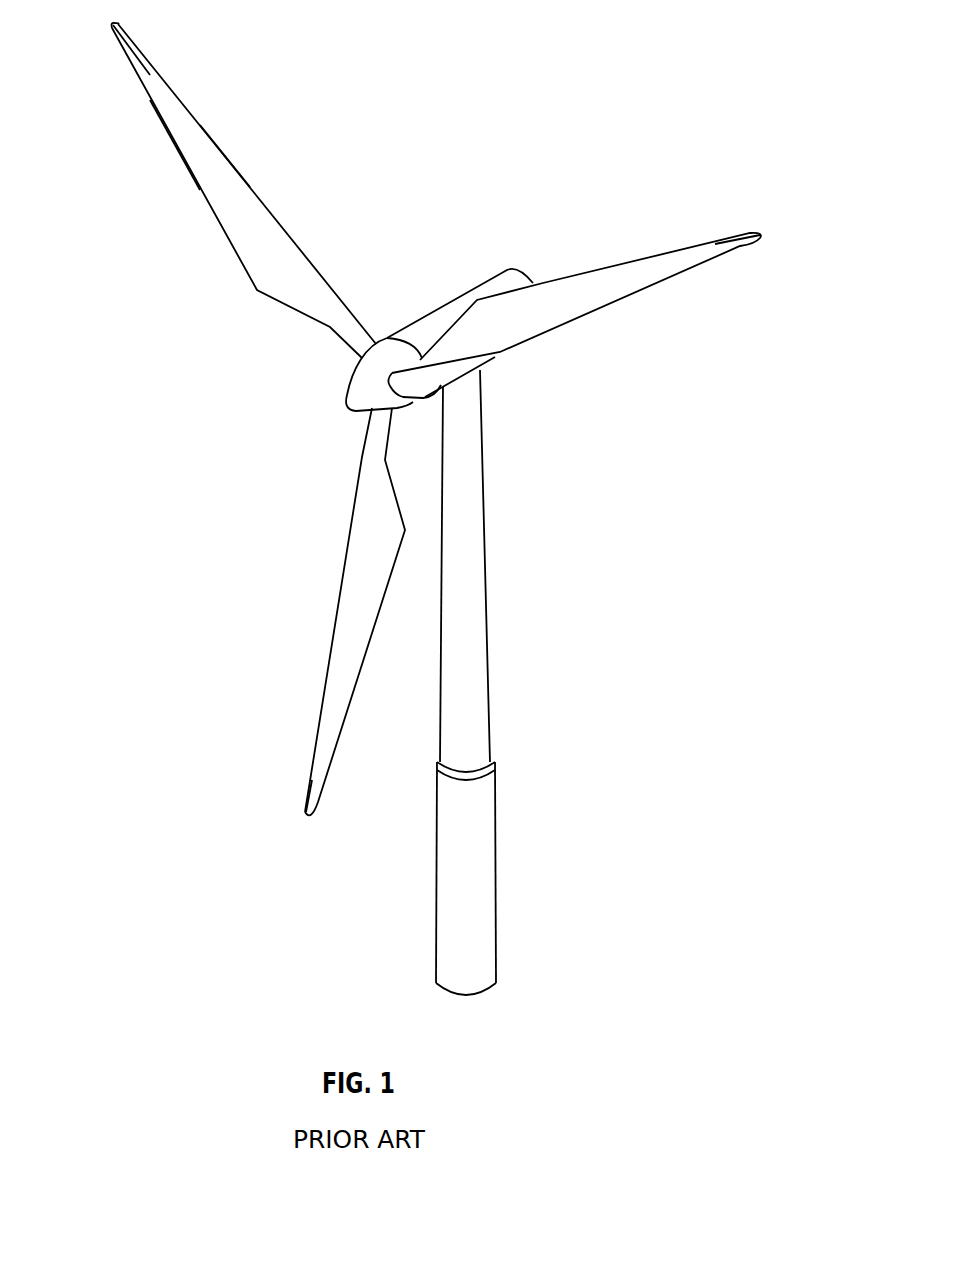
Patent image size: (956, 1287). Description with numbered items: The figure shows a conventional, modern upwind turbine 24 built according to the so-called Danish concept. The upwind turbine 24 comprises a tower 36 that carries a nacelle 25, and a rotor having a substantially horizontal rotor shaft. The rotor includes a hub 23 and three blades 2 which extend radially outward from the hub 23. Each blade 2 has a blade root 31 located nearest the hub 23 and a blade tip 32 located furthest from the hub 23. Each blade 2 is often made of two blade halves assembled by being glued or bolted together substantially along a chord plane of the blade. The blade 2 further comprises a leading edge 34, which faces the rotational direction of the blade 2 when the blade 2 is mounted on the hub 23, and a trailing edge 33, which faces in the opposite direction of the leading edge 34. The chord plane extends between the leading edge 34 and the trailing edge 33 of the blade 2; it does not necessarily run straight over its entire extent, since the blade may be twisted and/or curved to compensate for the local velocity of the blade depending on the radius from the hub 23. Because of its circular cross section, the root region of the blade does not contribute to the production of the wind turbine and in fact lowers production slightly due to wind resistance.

The blade 2 is at (256, 272).
The hub 23 is at (347, 398).
The upwind turbine 24 is at (435, 507).
The nacelle 25 is at (423, 328).
The blade root 31 is at (360, 357).
The blade tip 32 is at (152, 75).
The trailing edge 33 is at (183, 167).
The leading edge 34 is at (237, 165).
The tower 36 is at (477, 478).